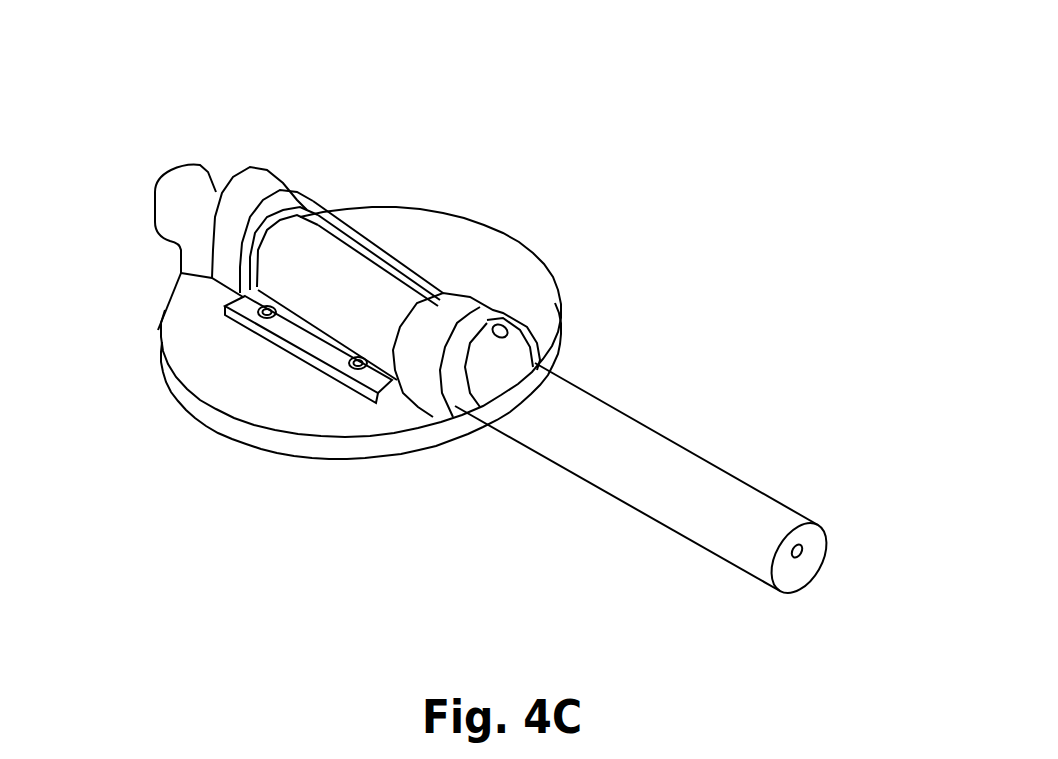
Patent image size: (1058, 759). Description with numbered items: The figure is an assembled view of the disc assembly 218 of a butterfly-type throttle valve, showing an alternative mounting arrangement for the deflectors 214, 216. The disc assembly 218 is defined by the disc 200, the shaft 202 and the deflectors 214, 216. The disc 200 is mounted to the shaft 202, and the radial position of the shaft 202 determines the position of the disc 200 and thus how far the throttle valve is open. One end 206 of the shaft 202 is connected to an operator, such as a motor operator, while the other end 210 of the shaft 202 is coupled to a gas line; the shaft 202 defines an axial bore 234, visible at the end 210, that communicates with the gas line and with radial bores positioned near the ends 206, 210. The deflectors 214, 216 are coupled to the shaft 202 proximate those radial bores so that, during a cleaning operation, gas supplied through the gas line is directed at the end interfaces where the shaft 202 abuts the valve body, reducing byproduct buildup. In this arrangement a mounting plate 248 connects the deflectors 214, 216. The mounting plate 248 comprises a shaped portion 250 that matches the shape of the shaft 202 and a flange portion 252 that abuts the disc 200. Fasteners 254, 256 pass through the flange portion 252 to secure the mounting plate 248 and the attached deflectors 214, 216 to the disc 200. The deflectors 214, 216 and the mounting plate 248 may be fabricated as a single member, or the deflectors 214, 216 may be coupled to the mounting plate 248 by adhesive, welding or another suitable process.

The disc assembly 218 is at (180, 82).
The disc 200 is at (262, 393).
The shaft 202 is at (573, 447).
The end of the shaft 206 is at (168, 182).
The other end of the shaft 210 is at (793, 580).
The deflector 214 is at (260, 217).
The deflector 216 is at (468, 327).
The axial bore 234 is at (807, 547).
The mounting plate 248 is at (329, 251).
The shaped portion 250 is at (383, 292).
The flange portion 252 is at (240, 310).
The fastener 254 is at (250, 330).
The fastener 256 is at (343, 382).